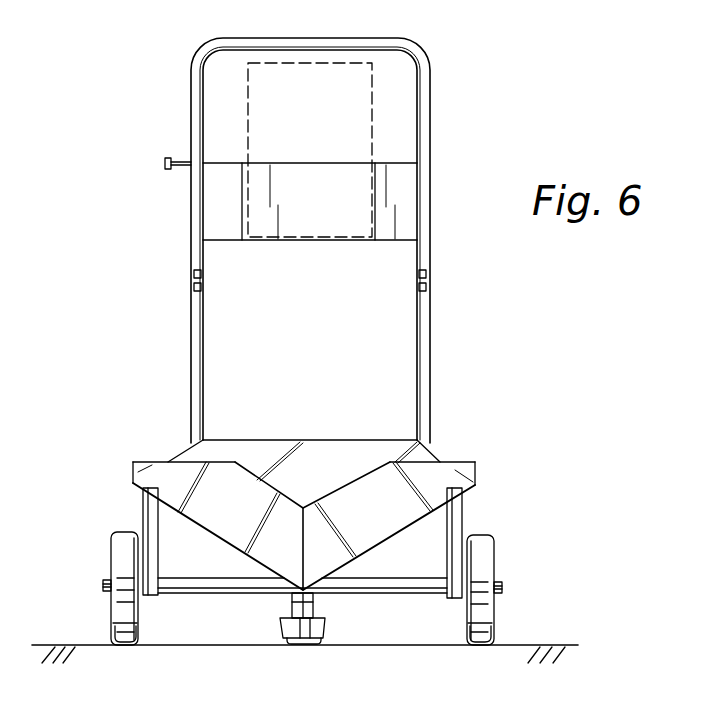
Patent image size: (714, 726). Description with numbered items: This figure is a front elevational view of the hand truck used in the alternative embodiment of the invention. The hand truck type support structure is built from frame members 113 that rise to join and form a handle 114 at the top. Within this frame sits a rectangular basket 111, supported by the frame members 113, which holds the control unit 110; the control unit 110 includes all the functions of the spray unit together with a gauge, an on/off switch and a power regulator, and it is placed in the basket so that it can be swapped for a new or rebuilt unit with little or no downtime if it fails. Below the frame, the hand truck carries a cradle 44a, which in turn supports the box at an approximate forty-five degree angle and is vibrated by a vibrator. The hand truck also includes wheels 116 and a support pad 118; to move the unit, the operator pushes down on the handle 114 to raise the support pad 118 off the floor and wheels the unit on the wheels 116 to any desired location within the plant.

The control unit 110 is at (287, 65).
The rectangular basket 111 is at (375, 222).
The frame members 113 is at (197, 252).
The handle 114 is at (392, 40).
The cradle 44a is at (475, 463).
The wheels 116 is at (122, 620).
The support pad 118 is at (325, 633).